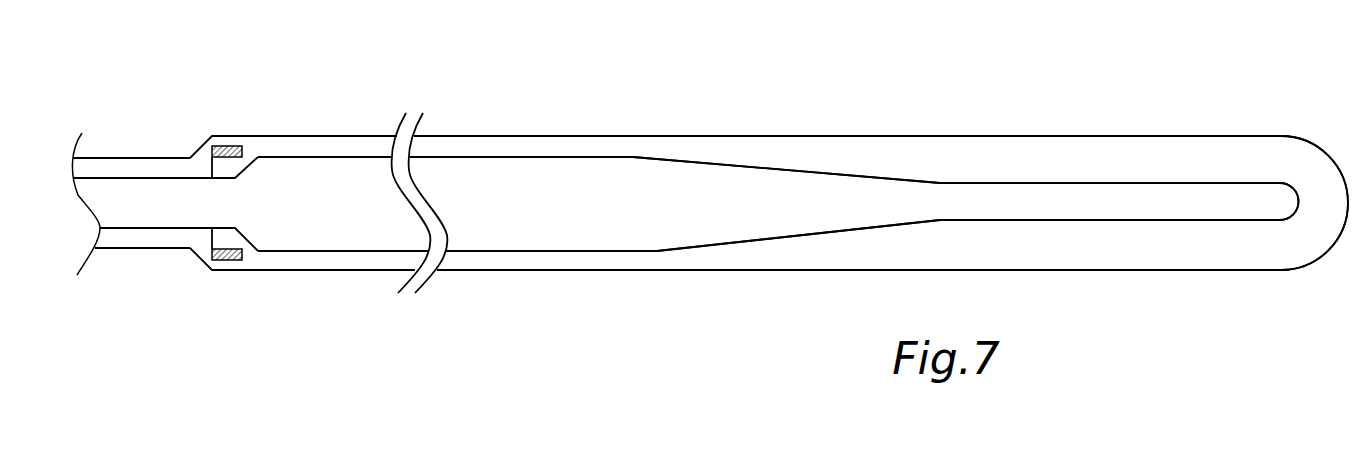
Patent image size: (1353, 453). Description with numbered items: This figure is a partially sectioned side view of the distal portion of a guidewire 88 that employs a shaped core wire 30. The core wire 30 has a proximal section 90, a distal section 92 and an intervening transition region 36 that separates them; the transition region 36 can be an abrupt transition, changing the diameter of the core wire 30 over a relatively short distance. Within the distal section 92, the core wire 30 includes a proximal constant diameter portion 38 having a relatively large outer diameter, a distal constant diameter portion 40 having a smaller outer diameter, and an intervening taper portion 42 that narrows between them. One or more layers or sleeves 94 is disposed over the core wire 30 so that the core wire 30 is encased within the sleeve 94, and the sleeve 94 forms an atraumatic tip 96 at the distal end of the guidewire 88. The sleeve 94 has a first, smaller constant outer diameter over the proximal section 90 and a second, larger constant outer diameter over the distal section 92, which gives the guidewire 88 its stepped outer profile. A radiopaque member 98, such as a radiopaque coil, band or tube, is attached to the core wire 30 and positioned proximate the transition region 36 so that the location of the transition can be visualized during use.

The core wire 30 is at (470, 158).
The transition region 36 is at (265, 225).
The proximal constant diameter portion 38 is at (503, 237).
The distal constant diameter portion 40 is at (1092, 205).
The taper portion 42 is at (758, 222).
The guidewire 88 is at (608, 135).
The proximal section 90 is at (125, 128).
The distal section 92 is at (967, 105).
The sleeve 94 is at (1110, 153).
The atraumatic tip 96 is at (1312, 238).
The radiopaque member 98 is at (230, 148).